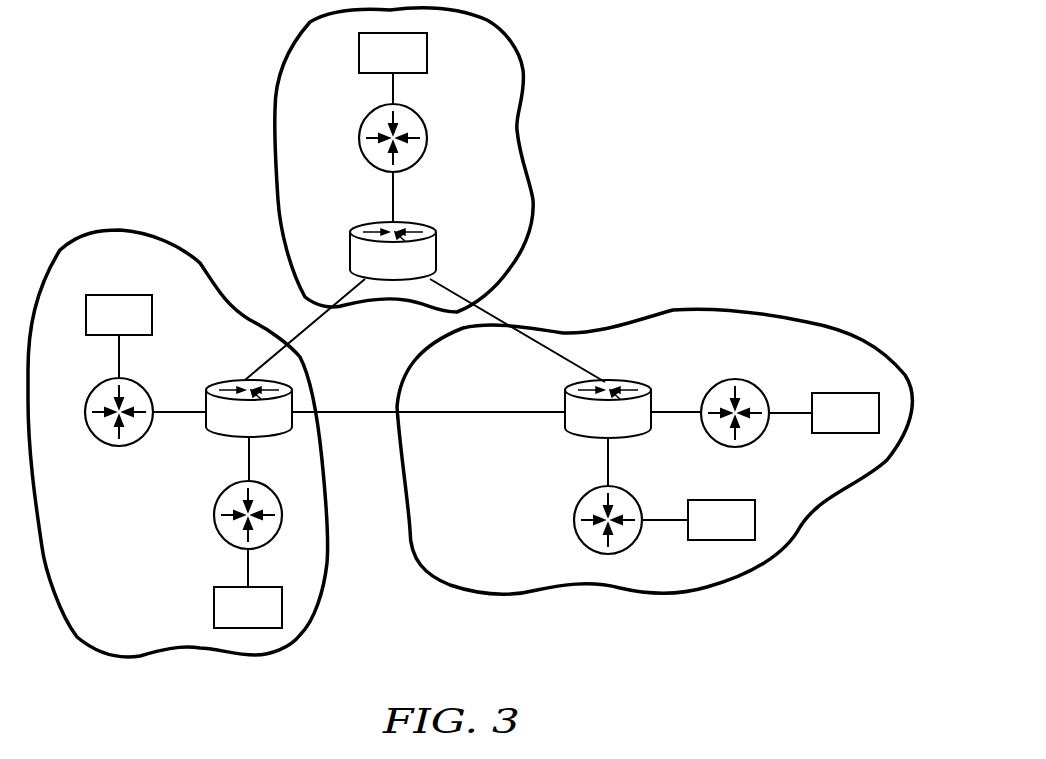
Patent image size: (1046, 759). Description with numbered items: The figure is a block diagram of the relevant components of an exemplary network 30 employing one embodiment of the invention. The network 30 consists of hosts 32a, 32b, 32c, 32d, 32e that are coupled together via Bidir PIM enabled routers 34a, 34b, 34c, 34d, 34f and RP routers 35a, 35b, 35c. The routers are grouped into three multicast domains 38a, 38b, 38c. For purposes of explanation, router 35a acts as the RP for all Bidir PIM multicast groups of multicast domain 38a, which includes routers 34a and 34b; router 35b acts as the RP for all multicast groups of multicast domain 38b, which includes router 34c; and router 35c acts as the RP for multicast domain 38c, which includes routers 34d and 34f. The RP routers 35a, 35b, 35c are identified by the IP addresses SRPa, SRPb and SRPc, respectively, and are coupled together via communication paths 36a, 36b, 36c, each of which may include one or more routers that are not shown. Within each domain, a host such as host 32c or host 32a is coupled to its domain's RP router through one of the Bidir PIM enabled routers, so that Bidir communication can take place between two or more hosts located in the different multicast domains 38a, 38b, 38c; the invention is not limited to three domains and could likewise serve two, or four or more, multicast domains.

The network 30 is at (692, 105).
The host 32a is at (117, 295).
The host 32b is at (213, 620).
The host 32c is at (359, 50).
The host 32d is at (842, 393).
The host 32e is at (720, 542).
The Bidir PIM enabled router 34a is at (128, 380).
The Bidir PIM enabled router 34b is at (213, 522).
The Bidir PIM enabled router 34c is at (421, 117).
The Bidir PIM enabled router 34d is at (730, 378).
The Bidir PIM enabled router 34f is at (577, 535).
The RP router 35a is at (206, 436).
The RP router 35b is at (439, 258).
The RP router 35c is at (571, 436).
The communication path 36a is at (310, 322).
The communication path 36b is at (498, 312).
The communication path 36c is at (337, 414).
The multicast domain 38a is at (70, 245).
The multicast domain 38b is at (522, 170).
The multicast domain 38c is at (705, 308).